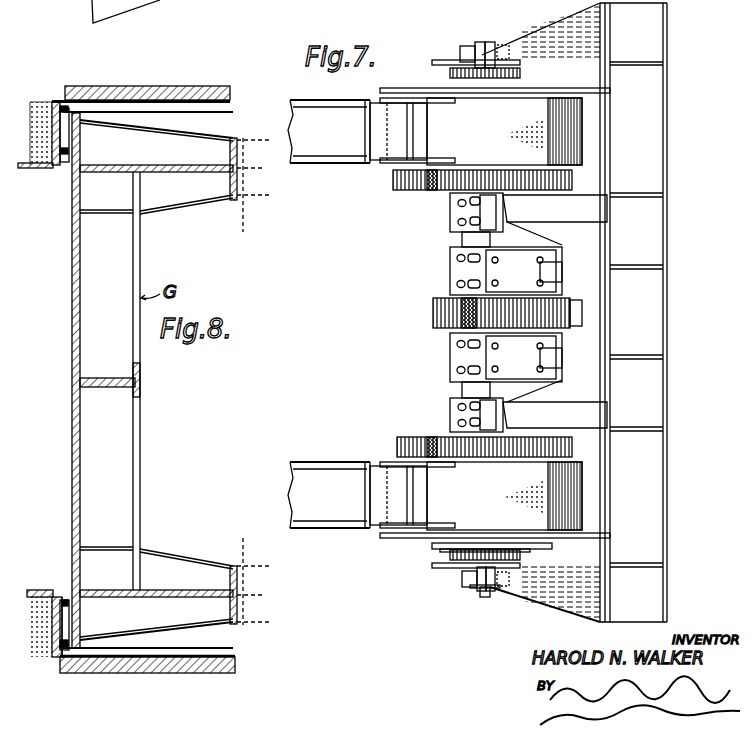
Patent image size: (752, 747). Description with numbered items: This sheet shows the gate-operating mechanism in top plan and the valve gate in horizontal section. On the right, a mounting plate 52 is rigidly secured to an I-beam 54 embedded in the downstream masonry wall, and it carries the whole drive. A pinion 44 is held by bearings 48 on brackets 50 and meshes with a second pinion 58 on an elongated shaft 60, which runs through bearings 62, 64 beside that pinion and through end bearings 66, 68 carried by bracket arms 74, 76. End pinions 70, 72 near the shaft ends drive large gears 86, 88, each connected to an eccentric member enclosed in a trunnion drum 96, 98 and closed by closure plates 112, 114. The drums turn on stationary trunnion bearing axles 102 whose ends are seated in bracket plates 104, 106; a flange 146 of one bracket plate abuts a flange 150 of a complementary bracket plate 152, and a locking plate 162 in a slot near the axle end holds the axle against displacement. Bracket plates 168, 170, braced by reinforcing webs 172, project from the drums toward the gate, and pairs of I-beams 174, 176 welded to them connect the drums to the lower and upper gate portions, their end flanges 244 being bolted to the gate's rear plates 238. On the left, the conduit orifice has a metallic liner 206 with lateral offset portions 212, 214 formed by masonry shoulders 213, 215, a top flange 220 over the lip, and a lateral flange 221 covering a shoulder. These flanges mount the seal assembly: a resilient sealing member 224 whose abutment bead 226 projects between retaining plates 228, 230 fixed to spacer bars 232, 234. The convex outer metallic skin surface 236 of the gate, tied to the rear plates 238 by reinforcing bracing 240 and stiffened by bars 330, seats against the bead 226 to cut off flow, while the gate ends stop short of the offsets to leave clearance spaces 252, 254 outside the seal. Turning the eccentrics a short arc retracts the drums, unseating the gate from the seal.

In FIG. 7, the pinion 44 is at (582, 318).
In FIG. 7, the bearings 48 is at (560, 265).
In FIG. 7, the brackets 50 is at (595, 279).
In FIG. 7, the mounting plate 52 is at (608, 122).
In FIG. 7, the I-beam 54 is at (668, 104).
In FIG. 7, the second pinion 58 is at (433, 309).
In FIG. 7, the elongated shaft 60 is at (462, 240).
In FIG. 7, the bearing 62 is at (450, 355).
In FIG. 7, the bearing 64 is at (450, 271).
In FIG. 7, the end bearing 66 is at (450, 404).
In FIG. 7, the end bearing 68 is at (450, 222).
In FIG. 7, the end pinion 70 is at (450, 426).
In FIG. 7, the end pinion 72 is at (442, 193).
In FIG. 7, the bracket arm 74 is at (590, 414).
In FIG. 7, the bracket arm 76 is at (590, 212).
In FIG. 7, the large gear 86 is at (397, 446).
In FIG. 7, the large gear 88 is at (393, 182).
In FIG. 7, the trunnion drum 96 is at (504, 496).
In FIG. 7, the trunnion drum 98 is at (504, 131).
In FIG. 7, the stationary trunnion bearing axle 102 is at (468, 46).
In FIG. 7, the bracket plate 104 is at (555, 311).
In FIG. 7, the bracket plate 106 is at (522, 40).
In FIG. 7, the closure plate 112 is at (560, 547).
In FIG. 7, the closure plate 114 is at (492, 547).
In FIG. 7, the flange 146 is at (490, 600).
In FIG. 7, the flange 150 is at (483, 590).
In FIG. 7, the complementary bracket plate 152 is at (436, 60).
In FIG. 7, the locking plate 162 is at (515, 55).
In FIG. 7, the bracket plate 168 is at (350, 165).
In FIG. 7, the bracket plate 170 is at (310, 100).
In FIG. 7, the reinforcing web 172 is at (372, 150).
In FIG. 8, the I-beam 174 is at (258, 200).
In FIG. 7, the I-beam 176 is at (320, 125).
In FIG. 8, the metallic liner 206 is at (40, 168).
In FIG. 8, the lateral offset portion 212 is at (205, 104).
In FIG. 8, the masonry shoulder 213 is at (40, 125).
In FIG. 8, the lateral offset portion 214 is at (210, 672).
In FIG. 8, the masonry shoulder 215 is at (48, 600).
In FIG. 8, the top flange 220 is at (56, 102).
In FIG. 8, the lateral flange 221 is at (65, 110).
In FIG. 8, the resilient sealing member 224 is at (72, 152).
In FIG. 8, the abutment bead 226 is at (70, 140).
In FIG. 8, the retaining plate 228 is at (70, 117).
In FIG. 8, the retaining plate 230 is at (65, 168).
In FIG. 8, the spacer bar 232 is at (90, 100).
In FIG. 8, the spacer bar 234 is at (65, 205).
In FIG. 8, the outer metallic skin surface 236 is at (54, 380).
In FIG. 8, the rear plate 238 is at (232, 200).
In FIG. 8, the reinforcing bracing 240 is at (160, 216).
In FIG. 8, the end flange 244 is at (252, 381).
In FIG. 8, the clearance space 252 is at (184, 108).
In FIG. 8, the clearance space 254 is at (192, 655).
In FIG. 8, the bar 330 is at (123, 453).